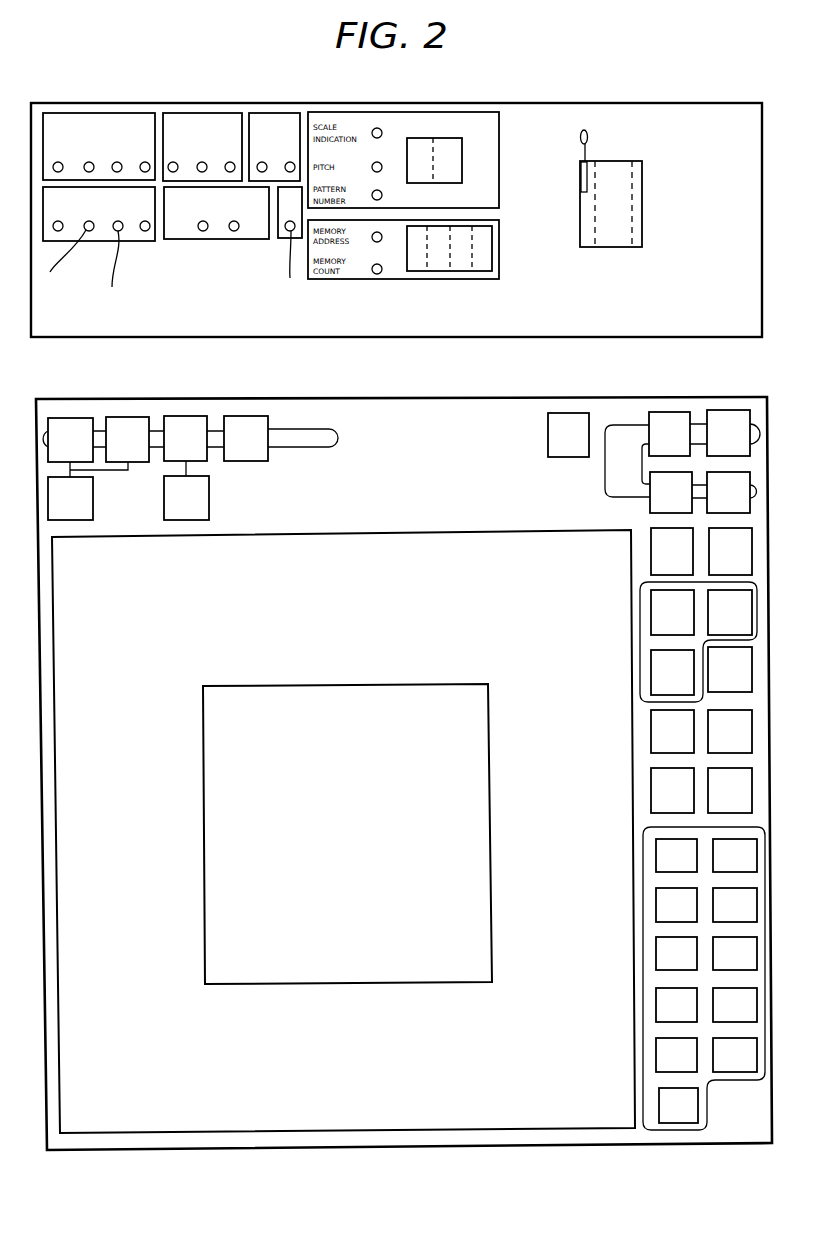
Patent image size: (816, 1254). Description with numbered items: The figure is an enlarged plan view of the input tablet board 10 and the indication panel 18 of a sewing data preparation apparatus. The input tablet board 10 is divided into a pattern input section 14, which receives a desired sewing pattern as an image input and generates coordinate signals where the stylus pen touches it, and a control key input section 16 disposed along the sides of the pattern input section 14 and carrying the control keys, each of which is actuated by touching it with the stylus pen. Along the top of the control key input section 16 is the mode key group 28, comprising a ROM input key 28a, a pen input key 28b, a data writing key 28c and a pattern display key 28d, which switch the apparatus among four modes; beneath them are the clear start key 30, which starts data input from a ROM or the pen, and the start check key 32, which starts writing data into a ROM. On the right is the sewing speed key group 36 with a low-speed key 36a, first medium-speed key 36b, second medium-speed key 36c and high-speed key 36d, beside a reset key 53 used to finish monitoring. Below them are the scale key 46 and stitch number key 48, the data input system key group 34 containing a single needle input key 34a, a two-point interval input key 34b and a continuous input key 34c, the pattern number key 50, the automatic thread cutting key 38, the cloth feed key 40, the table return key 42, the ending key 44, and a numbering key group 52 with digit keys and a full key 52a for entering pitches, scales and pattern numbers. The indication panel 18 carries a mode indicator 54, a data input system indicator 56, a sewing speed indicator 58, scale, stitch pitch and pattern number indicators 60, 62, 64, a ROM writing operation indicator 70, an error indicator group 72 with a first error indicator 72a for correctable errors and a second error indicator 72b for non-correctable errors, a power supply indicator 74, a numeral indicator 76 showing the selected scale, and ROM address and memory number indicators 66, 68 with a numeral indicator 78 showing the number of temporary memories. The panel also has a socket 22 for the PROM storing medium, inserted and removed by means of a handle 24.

The input tablet board 10 is at (364, 399).
The pattern input section 14 is at (351, 672).
The control key input section 16 is at (429, 474).
The indication panel 18 is at (520, 103).
The socket 22 is at (642, 197).
The handle 24 is at (587, 137).
The mode key group 28 is at (302, 448).
The ROM input key 28a is at (68, 418).
The pen input key 28b is at (120, 417).
The data writing key 28c is at (176, 416).
The pattern display key 28d is at (239, 416).
The clear start key 30 is at (95, 498).
The start check key 32 is at (210, 498).
The data input system key group 34 is at (640, 670).
The single needle input key 34a is at (651, 610).
The two-point interval input key 34b is at (651, 690).
The continuous input key 34c is at (708, 633).
The sewing speed key group 36 is at (605, 476).
The low-speed key 36a is at (650, 508).
The first medium-speed key 36b is at (728, 410).
The second medium-speed key 36c is at (707, 511).
The high-speed key 36d is at (670, 413).
The automatic thread cutting key 38 is at (651, 737).
The cloth feed key 40 is at (708, 753).
The table return key 42 is at (651, 790).
The ending key 44 is at (708, 813).
The scale key 46 is at (651, 555).
The stitch number key 48 is at (709, 572).
The pattern number key 50 is at (708, 692).
The numbering key group 52 is at (643, 938).
The full key 52a is at (659, 1105).
The reset key 53 is at (548, 438).
The mode indicator 54 is at (127, 116).
The data input system indicator 56 is at (213, 115).
The sewing speed indicator 58 is at (96, 245).
The scale indicator 60 is at (374, 129).
The stitch pitch indicator 62 is at (381, 163).
The pattern number indicator 64 is at (381, 198).
The ROM address indicator 66 is at (381, 240).
The memory number indicator 68 is at (380, 273).
The ROM writing operation indicator 70 is at (270, 114).
The error indicator group 72 is at (165, 241).
The first error indicator 72a is at (203, 231).
The second error indicator 72b is at (234, 231).
The power supply indicator 74 is at (277, 240).
The numeral indicator 76 is at (449, 138).
The numeral indicator 78 is at (492, 248).